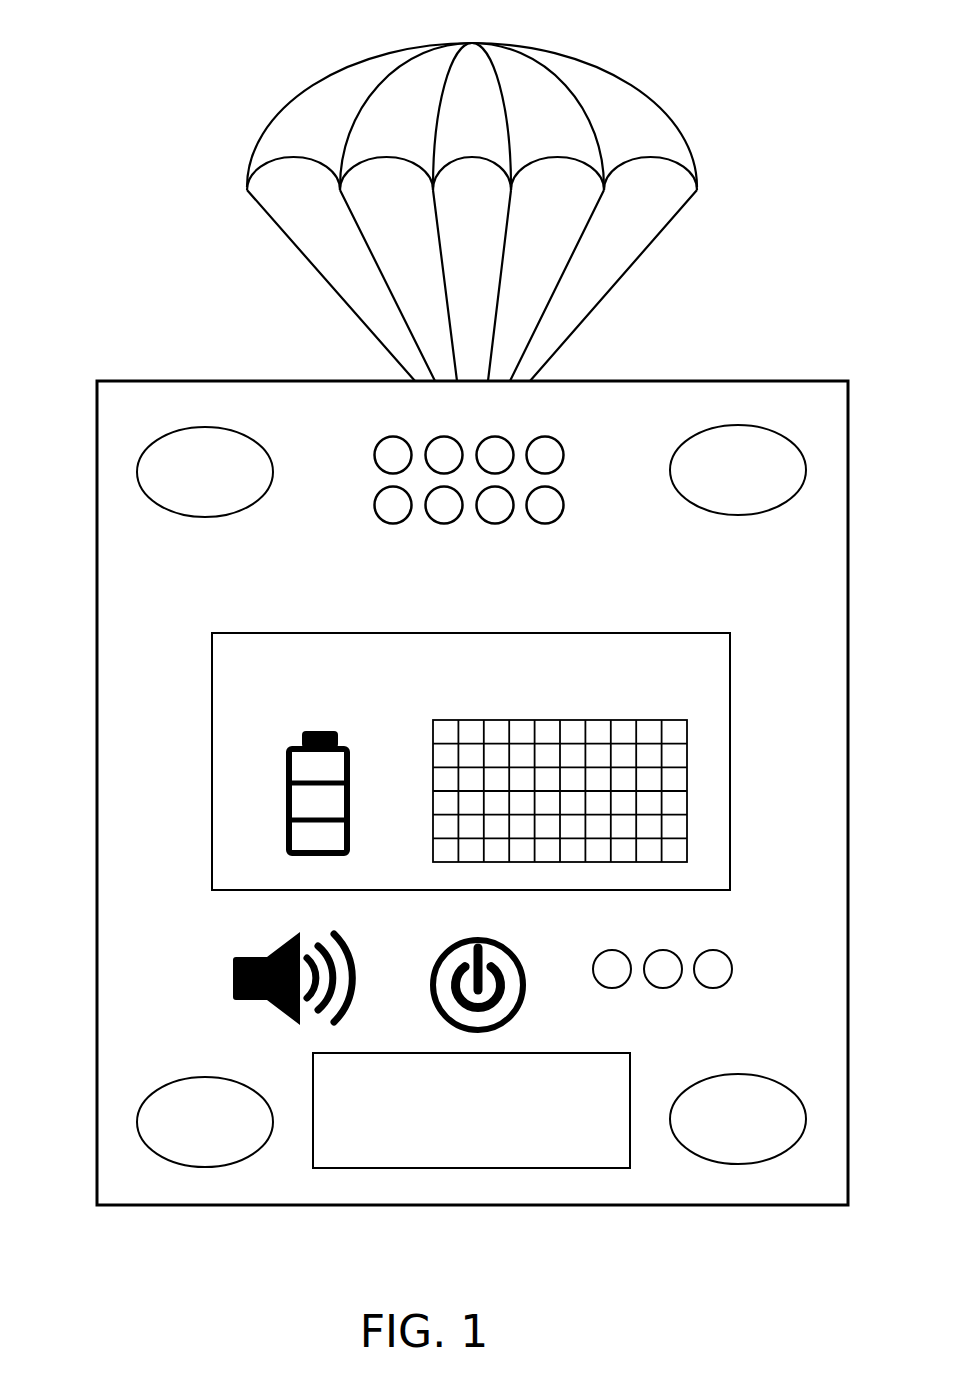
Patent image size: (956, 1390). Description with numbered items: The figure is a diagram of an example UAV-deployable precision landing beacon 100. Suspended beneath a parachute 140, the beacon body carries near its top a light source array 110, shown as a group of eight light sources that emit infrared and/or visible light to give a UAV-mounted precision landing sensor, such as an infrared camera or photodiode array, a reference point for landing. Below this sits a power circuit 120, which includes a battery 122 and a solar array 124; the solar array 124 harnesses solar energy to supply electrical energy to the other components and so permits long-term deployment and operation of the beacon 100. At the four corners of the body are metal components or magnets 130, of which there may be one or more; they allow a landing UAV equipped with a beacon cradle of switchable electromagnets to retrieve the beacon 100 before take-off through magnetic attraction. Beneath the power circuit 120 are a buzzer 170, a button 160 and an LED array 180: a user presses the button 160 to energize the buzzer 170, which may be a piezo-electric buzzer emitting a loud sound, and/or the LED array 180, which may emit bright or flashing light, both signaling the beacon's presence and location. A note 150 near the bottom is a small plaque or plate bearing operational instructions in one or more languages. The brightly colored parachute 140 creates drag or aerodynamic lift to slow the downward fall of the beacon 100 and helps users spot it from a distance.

The UAV-deployable precision landing beacon 100 is at (131, 30).
The light source array 110 is at (368, 532).
The power circuit 120 is at (471, 761).
The battery 122 is at (318, 767).
The solar array 124 is at (560, 772).
The metal components or magnets 130 is at (471, 796).
The parachute 140 is at (498, 212).
The note 150 is at (471, 1110).
The button 160 is at (478, 967).
The buzzer 170 is at (292, 964).
The LED array 180 is at (662, 945).